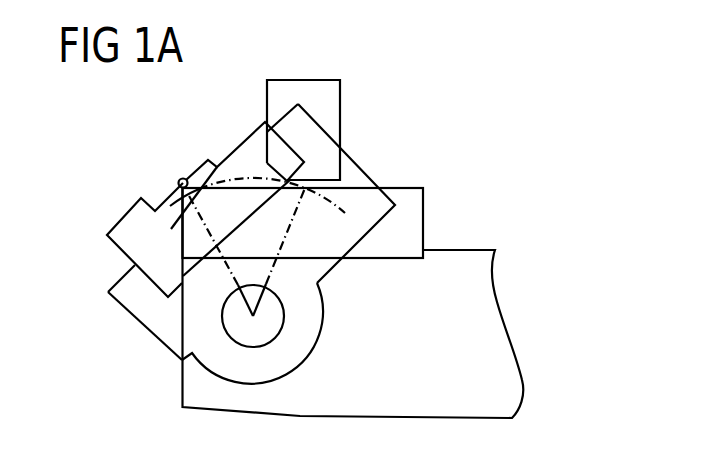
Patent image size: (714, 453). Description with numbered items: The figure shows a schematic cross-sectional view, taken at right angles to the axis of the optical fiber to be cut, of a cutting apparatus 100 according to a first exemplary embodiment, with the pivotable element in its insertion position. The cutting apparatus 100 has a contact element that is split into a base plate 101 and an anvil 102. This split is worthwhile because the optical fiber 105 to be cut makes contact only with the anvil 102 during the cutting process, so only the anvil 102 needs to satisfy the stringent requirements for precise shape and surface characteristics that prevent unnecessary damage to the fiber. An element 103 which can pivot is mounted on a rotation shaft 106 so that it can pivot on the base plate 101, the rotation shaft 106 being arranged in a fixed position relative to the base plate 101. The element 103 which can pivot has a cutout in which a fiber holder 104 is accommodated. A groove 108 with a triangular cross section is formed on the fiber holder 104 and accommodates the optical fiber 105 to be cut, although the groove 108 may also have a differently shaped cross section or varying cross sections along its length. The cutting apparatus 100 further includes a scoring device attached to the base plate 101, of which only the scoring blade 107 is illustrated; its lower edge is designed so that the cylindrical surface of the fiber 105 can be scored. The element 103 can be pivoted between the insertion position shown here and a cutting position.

The cutting apparatus 100 is at (521, 147).
The base plate 101 is at (485, 273).
The anvil 102 is at (418, 207).
The element which can pivot 103 is at (305, 352).
The fiber holder 104 is at (126, 229).
The optical fiber 105 is at (181, 180).
The rotation shaft 106 is at (257, 316).
The scoring blade 107 is at (334, 97).
The groove 108 is at (187, 179).